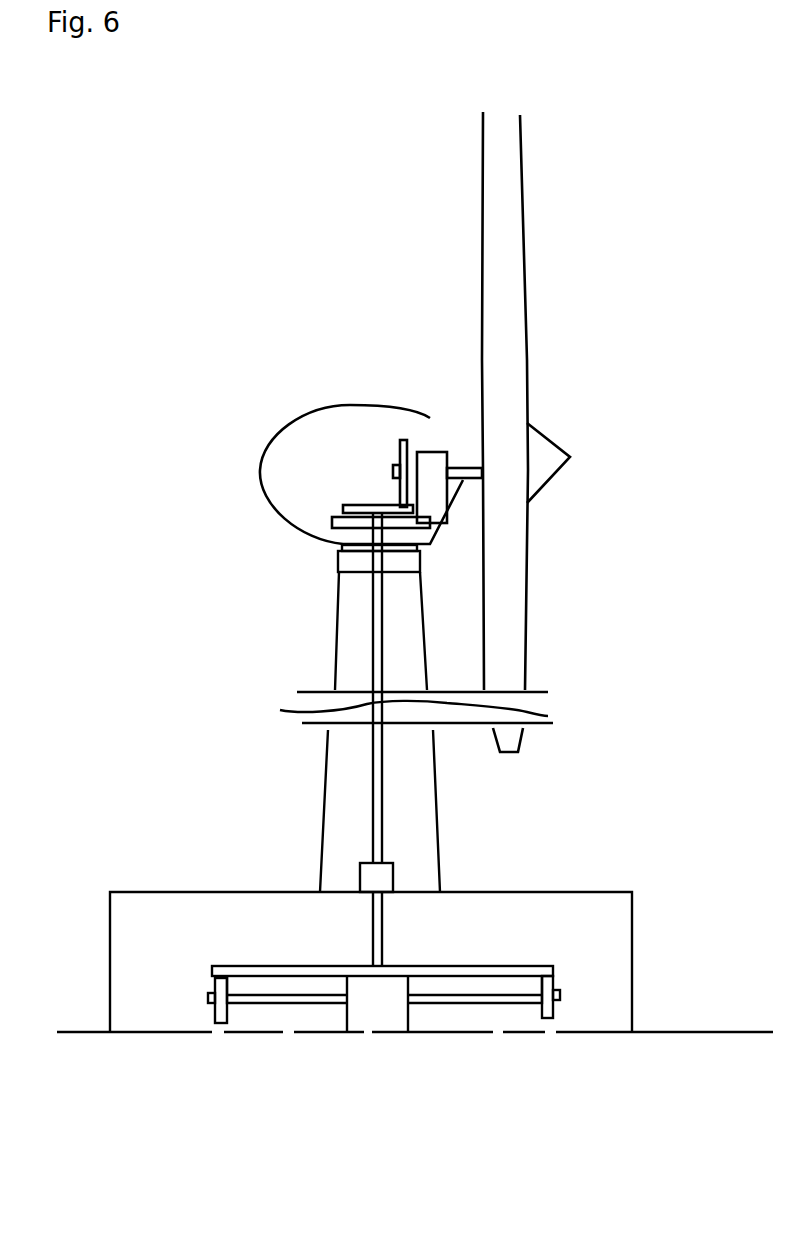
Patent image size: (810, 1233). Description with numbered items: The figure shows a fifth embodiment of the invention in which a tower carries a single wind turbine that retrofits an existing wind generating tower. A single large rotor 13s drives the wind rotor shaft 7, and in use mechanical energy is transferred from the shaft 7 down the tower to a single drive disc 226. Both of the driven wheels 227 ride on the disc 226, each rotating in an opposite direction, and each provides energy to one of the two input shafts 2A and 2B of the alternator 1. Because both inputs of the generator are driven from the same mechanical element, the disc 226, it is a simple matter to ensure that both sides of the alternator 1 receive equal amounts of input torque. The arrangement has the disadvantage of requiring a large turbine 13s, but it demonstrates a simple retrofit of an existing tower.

The wind rotor shaft 7 is at (460, 457).
The rotor 13s is at (530, 610).
The drive disc 226 is at (270, 965).
The driven wheels 227 is at (218, 1023).
The input shaft 2A is at (287, 1003).
The input shaft 2B is at (498, 1003).
The alternator 1 is at (368, 1018).